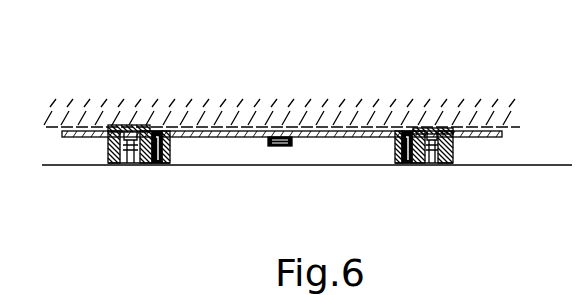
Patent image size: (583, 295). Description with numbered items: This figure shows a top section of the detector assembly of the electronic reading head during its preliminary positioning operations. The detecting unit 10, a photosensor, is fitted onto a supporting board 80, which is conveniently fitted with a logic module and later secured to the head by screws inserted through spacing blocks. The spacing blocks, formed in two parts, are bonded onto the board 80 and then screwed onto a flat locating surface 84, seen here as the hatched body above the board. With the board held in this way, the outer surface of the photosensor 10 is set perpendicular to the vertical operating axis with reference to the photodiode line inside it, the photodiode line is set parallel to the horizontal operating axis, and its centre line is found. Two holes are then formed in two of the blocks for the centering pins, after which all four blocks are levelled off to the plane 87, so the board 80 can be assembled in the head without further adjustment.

The detecting unit 10 is at (272, 148).
The supporting board 80 is at (371, 138).
The flat locating surface 84 is at (493, 98).
The plane 87 is at (533, 167).